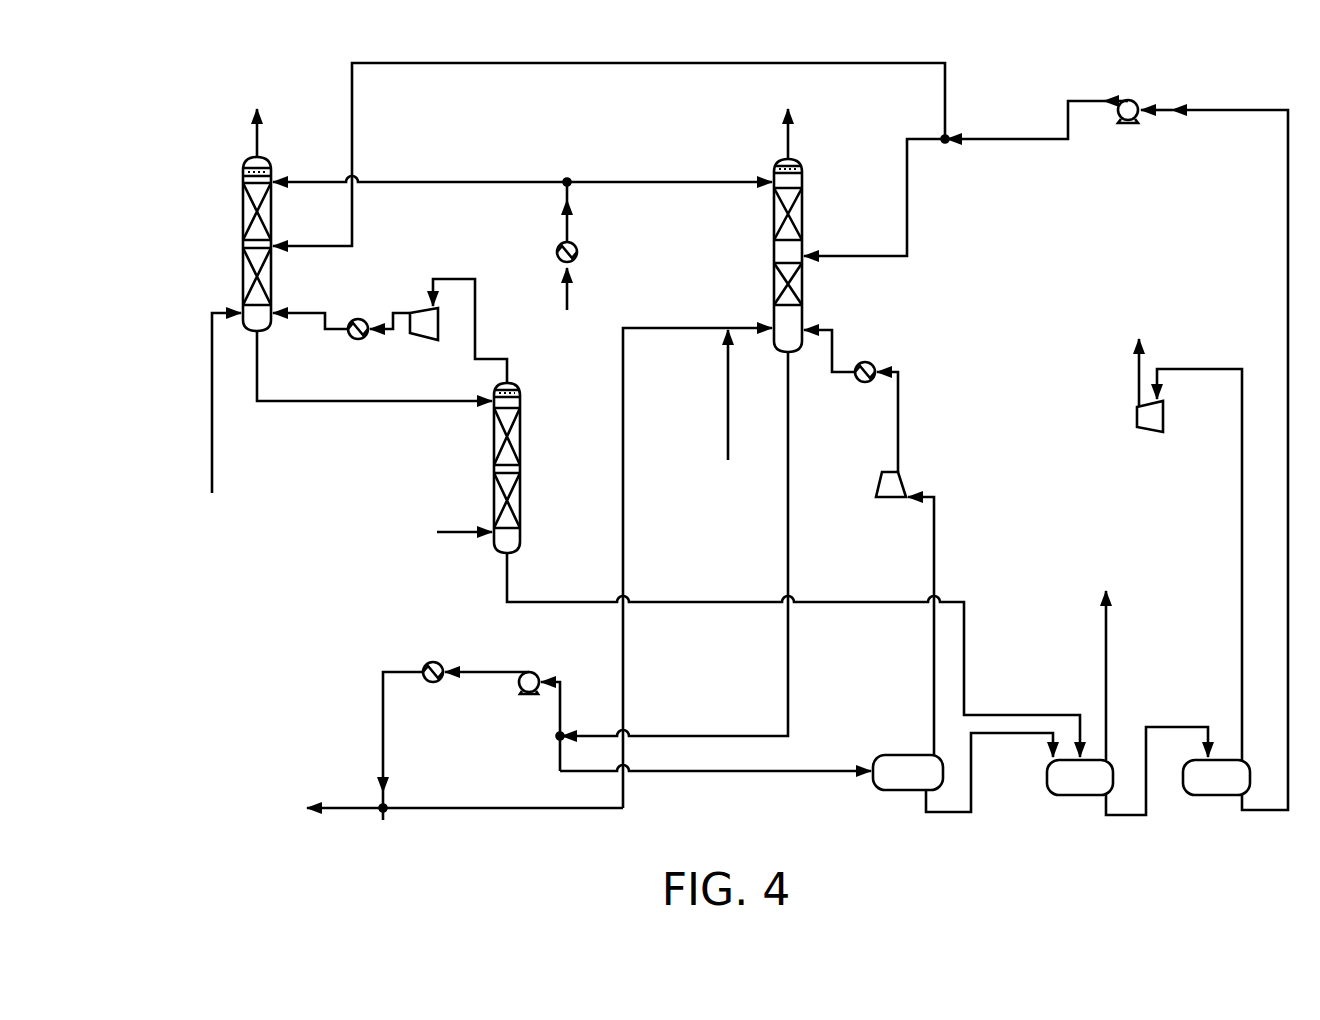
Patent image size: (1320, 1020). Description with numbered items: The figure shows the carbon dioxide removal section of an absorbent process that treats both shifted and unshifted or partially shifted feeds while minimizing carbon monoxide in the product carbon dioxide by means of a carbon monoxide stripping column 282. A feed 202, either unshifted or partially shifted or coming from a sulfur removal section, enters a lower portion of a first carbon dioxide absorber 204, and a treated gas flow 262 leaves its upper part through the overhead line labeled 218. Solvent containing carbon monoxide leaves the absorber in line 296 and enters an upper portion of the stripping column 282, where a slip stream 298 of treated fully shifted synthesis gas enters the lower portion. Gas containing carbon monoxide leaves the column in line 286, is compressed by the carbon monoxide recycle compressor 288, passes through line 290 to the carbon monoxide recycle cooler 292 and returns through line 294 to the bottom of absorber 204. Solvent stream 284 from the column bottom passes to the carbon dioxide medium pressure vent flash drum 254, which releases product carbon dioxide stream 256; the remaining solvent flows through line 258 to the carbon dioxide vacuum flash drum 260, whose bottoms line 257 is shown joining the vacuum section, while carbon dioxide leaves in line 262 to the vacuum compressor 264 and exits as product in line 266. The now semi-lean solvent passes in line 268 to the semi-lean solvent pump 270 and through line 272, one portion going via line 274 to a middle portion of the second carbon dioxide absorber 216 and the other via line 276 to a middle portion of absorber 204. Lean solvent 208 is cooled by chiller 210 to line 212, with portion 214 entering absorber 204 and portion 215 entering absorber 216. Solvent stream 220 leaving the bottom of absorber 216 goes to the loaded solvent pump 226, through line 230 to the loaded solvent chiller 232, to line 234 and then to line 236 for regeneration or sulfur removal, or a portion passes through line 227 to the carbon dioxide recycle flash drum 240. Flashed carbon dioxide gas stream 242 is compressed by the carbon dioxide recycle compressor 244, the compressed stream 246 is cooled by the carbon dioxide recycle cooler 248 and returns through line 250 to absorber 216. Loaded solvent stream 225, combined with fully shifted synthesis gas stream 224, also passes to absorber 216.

The feed 202 is at (211, 446).
The carbon dioxide absorber 204 is at (273, 281).
The lean solvent supply 208 is at (570, 296).
The chiller 210 is at (580, 252).
The lean solvent line 212 is at (570, 218).
The lean solvent portion 214 is at (490, 182).
The lean solvent portion 215 is at (686, 182).
The carbon dioxide absorber 216 is at (803, 312).
The overhead stream 218 is at (786, 128).
The solvent stream 220 is at (790, 437).
The synthesis gas feed stream 224 is at (727, 401).
The loaded solvent stream 225 is at (624, 437).
The loaded solvent pump 226 is at (524, 695).
The line 227 is at (735, 776).
The line 230 is at (488, 672).
The loaded solvent chiller 232 is at (433, 683).
The line 234 is at (383, 731).
The line 236 is at (338, 808).
The carbon dioxide recycle flash drum 240 is at (888, 753).
The carbon dioxide gas stream 242 is at (933, 565).
The carbon dioxide recycle compressor 244 is at (872, 496).
The compressed carbon dioxide stream 246 is at (900, 429).
The carbon dioxide recycle cooler 248 is at (862, 382).
The line 250 is at (834, 340).
The carbon dioxide medium pressure vent flash drum 254 is at (1080, 796).
The product carbon dioxide stream 256 is at (1106, 655).
The liquid stream 257 is at (975, 805).
The line 258 is at (1176, 727).
The carbon dioxide vacuum flash drum 260 is at (1218, 796).
The treated gas flow / carbon dioxide line 262 is at (262, 129).
The vacuum compressor 264 is at (1137, 415).
The product carbon dioxide line 266 is at (1139, 372).
The semi-lean solvent line 268 is at (1288, 330).
The semi-lean solvent pump 270 is at (1128, 100).
The line 272 is at (1020, 140).
The semi-lean solvent line 274 is at (910, 222).
The semi-lean solvent line 276 is at (947, 91).
The carbon monoxide stripping column 282 is at (522, 446).
The solvent stream 284 is at (594, 600).
The carbon monoxide gas line 286 is at (498, 359).
The carbon monoxide recycle compressor 288 is at (423, 341).
The compressed gas line 290 is at (398, 310).
The carbon monoxide recycle cooler 292 is at (358, 340).
The line 294 is at (300, 314).
The solvent line 296 is at (336, 401).
The slip stream 298 is at (460, 530).